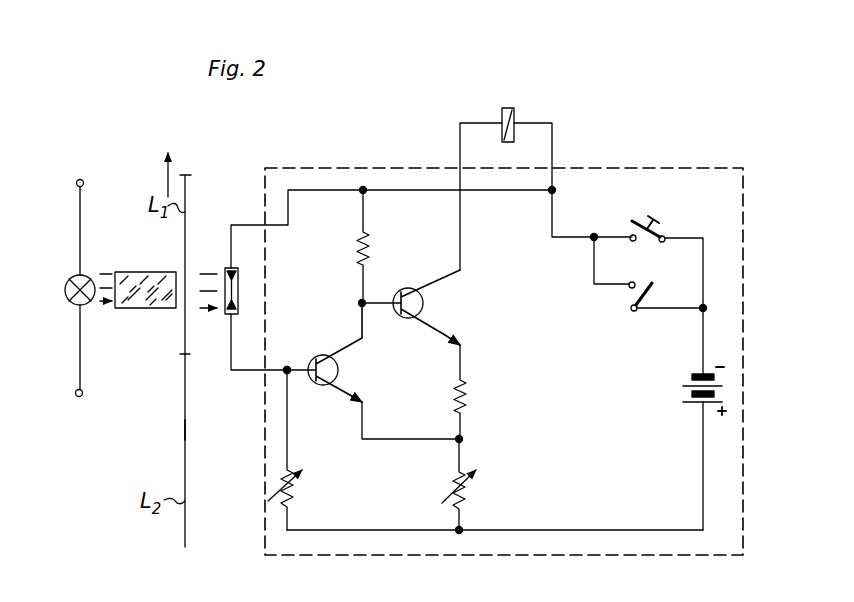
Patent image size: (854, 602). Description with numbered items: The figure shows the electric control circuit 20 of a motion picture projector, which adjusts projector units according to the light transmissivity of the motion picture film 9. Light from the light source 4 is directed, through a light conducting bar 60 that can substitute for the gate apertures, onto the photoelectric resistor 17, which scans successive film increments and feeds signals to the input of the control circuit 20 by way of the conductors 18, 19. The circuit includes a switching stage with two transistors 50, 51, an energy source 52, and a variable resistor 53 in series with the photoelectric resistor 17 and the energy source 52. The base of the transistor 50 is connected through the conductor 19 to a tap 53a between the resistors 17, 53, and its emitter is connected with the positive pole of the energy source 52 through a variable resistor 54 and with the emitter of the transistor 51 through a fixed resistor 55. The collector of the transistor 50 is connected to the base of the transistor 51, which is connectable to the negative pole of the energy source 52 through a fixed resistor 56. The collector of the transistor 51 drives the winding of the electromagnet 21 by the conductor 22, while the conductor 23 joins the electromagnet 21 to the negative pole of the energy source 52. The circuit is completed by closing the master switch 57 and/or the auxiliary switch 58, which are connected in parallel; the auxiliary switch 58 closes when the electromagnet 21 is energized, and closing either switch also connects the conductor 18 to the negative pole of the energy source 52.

The light source 4 is at (86, 276).
The motion picture film 9 is at (181, 428).
The light conducting bar 60 is at (138, 310).
The photoelectric resistor 17 is at (226, 270).
The conductor 18 is at (250, 223).
The conductor 19 is at (238, 372).
The control circuit 20 is at (363, 164).
The electromagnet 21 is at (514, 110).
The conductor 22 is at (460, 150).
The conductor 23 is at (553, 153).
The transistor 50 is at (328, 356).
The transistor 51 is at (411, 291).
The energy source 52 is at (690, 392).
The variable resistor 53 is at (294, 491).
The tap 53a is at (290, 374).
The variable resistor 54 is at (467, 494).
The fixed resistor 55 is at (469, 388).
The fixed resistor 56 is at (371, 252).
The master switch 57 is at (663, 232).
The auxiliary switch 58 is at (658, 292).